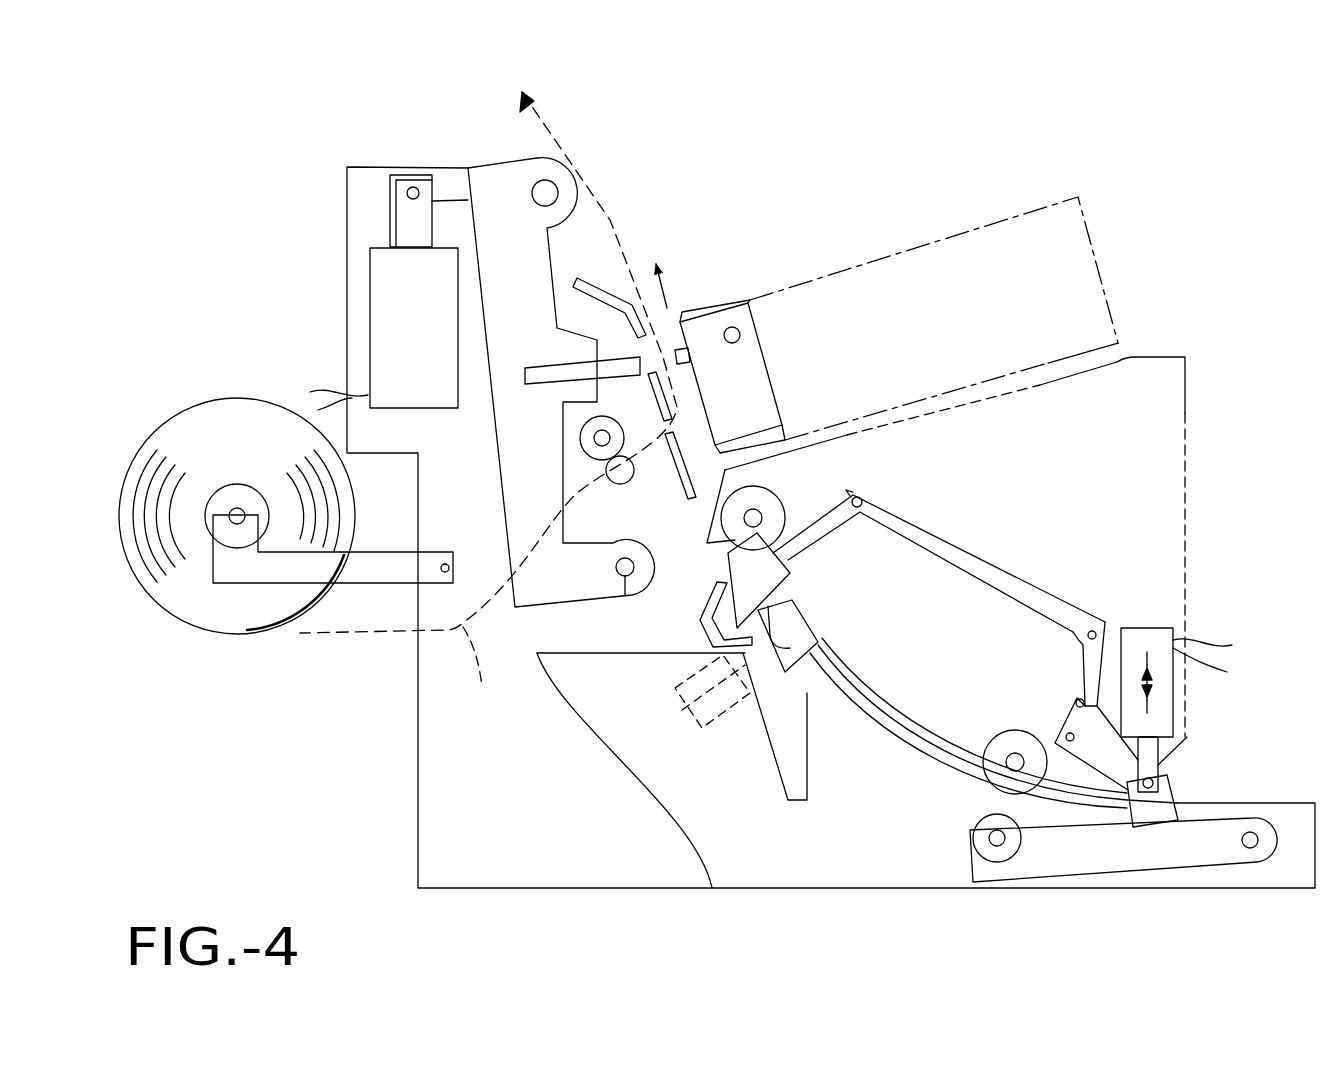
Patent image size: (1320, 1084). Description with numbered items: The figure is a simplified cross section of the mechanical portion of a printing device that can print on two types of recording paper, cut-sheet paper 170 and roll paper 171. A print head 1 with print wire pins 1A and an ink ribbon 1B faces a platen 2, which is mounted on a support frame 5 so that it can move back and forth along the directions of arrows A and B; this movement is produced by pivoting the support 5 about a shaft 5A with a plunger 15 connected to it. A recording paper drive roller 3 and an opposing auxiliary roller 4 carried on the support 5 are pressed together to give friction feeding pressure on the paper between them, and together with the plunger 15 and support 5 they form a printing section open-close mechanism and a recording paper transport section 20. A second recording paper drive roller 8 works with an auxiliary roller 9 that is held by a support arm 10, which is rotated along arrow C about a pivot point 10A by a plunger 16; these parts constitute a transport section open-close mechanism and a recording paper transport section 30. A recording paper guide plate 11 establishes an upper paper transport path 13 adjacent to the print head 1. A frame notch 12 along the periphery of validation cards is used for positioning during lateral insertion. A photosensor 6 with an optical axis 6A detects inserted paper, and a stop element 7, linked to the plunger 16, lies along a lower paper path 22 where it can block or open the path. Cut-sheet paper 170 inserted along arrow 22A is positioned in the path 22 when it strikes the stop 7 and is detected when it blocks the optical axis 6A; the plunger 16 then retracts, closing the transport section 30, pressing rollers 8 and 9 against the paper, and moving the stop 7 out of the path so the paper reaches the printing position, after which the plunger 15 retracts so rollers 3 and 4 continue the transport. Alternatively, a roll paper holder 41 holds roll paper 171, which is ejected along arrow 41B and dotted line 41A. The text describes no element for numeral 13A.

The print head 1 is at (738, 312).
The print wire pins 1A is at (680, 357).
The ink ribbon 1B is at (925, 273).
The platen 2 is at (622, 368).
The recording paper drive roller 3 is at (760, 517).
The auxiliary roller 4 is at (617, 558).
The support frame 5 is at (517, 560).
The shaft 5A is at (547, 187).
The photosensor 6 is at (807, 643).
The optical axis 6A is at (810, 613).
The stop element 7 is at (770, 582).
The recording paper drive roller 8 is at (1012, 742).
The auxiliary roller 9 is at (985, 836).
The support arm 10 is at (1132, 853).
The pivot point 10A is at (1250, 848).
The recording paper guide plate 11 is at (603, 293).
The frame notch 12 is at (785, 733).
The upper paper transport path 13 is at (693, 442).
The blade movement direction 13A is at (663, 287).
The plunger 15 is at (377, 300).
The plunger 16 is at (1180, 705).
The recording paper transport section 20 is at (607, 583).
The lower paper path 22 is at (867, 720).
The arrow 22A is at (1220, 783).
The recording paper transport section 30 is at (922, 831).
The roll paper holder 41 is at (223, 572).
The dotted line 41A is at (484, 675).
The arrow 41B is at (524, 94).
The cut-sheet paper 170 is at (888, 748).
The roll paper 171 is at (225, 618).
The arrow A is at (535, 285).
The arrow B is at (562, 451).
The arrow C is at (1150, 635).